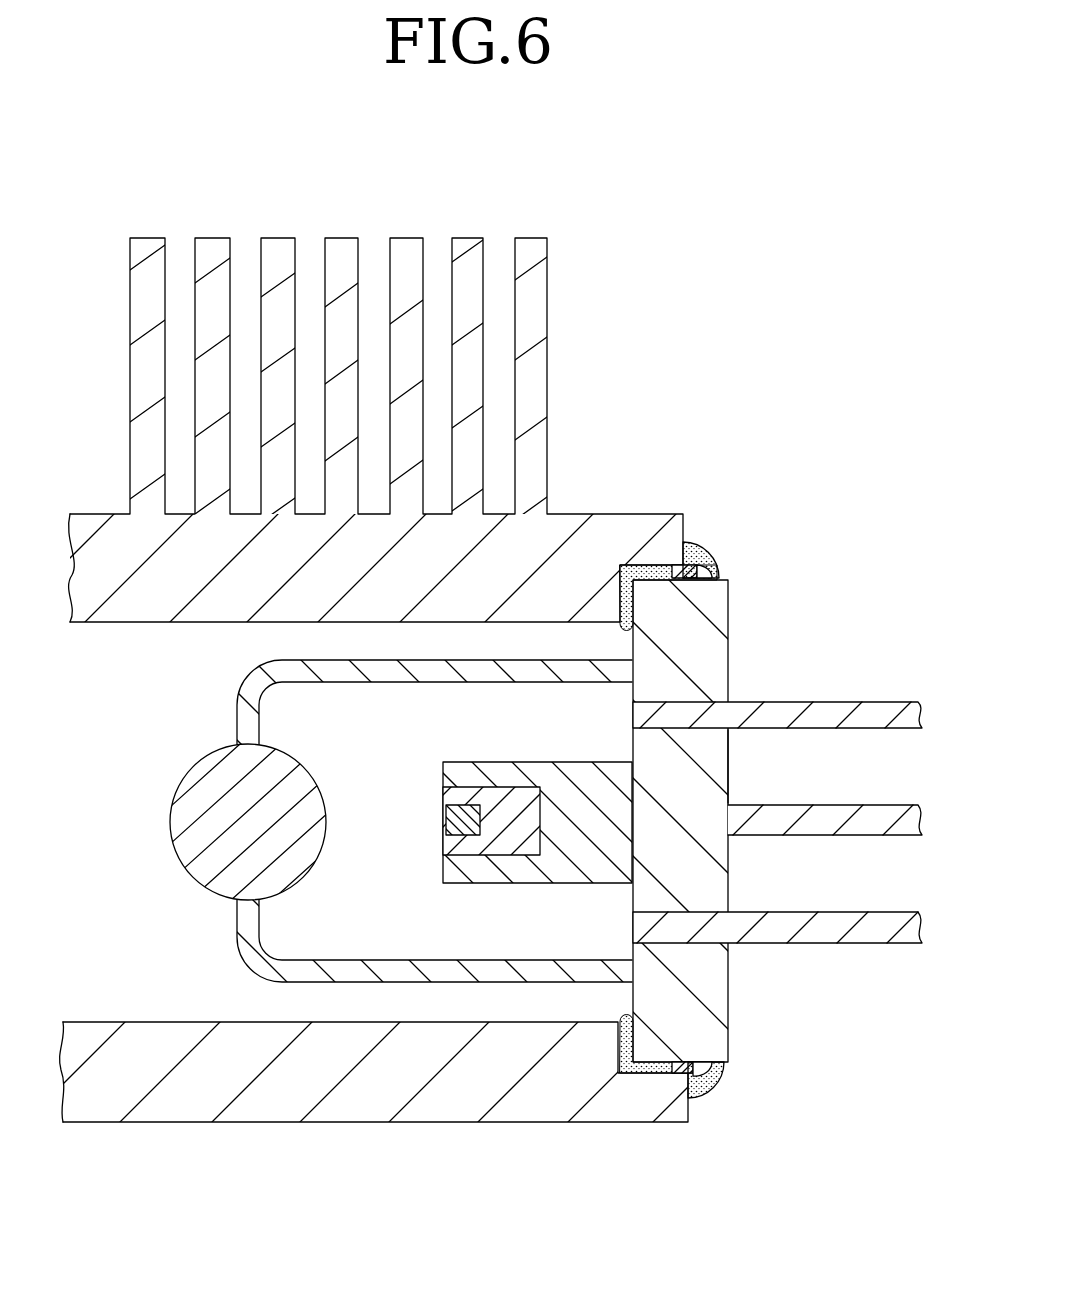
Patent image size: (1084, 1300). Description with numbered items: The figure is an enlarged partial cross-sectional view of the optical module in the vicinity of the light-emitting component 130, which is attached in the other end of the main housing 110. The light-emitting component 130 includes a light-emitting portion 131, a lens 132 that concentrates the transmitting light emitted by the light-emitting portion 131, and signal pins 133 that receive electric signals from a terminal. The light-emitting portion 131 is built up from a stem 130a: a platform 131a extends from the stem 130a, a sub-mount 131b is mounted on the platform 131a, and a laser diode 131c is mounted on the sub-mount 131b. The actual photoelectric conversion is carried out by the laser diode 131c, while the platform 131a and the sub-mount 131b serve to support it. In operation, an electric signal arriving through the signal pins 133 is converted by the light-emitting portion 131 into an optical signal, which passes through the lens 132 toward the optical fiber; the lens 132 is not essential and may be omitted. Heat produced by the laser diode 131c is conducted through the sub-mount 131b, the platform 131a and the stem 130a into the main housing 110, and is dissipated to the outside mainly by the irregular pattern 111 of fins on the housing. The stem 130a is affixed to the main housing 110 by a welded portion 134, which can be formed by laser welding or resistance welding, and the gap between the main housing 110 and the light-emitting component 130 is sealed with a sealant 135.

The main housing 110 is at (326, 1122).
The irregular pattern 111 is at (494, 205).
The light-emitting component 130 is at (812, 987).
The stem 130a is at (730, 755).
The light-emitting portion 131 is at (460, 751).
The platform 131a is at (537, 877).
The sub-mount 131b is at (468, 847).
The laser diode 131c is at (445, 810).
The lens 132 is at (188, 772).
The signal pins 133 is at (873, 702).
The welded portion 134 is at (689, 583).
The sealant 135 is at (718, 548).